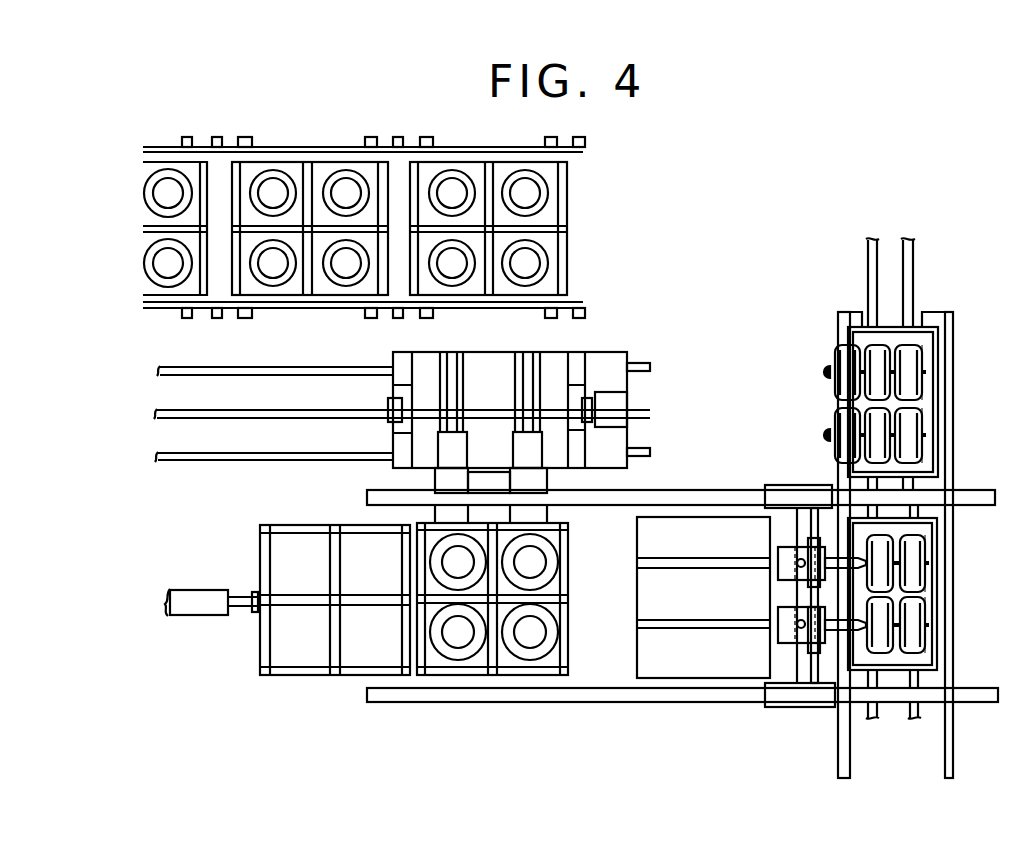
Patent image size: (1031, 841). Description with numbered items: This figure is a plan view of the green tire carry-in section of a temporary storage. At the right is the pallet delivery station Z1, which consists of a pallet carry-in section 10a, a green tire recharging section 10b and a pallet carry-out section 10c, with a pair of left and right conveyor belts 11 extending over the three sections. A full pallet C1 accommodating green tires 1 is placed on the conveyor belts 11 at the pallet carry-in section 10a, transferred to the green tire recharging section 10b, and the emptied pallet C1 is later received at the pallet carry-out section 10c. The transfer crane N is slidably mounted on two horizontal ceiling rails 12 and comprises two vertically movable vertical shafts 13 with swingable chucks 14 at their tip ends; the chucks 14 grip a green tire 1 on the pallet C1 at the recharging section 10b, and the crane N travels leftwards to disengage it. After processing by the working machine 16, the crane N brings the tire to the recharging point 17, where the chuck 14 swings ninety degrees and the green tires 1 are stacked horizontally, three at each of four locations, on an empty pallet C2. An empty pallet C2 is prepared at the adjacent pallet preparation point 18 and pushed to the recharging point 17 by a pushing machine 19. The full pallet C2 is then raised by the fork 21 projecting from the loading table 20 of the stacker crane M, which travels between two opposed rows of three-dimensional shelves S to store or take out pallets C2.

The green tire 1 is at (567, 188).
The three-dimensional shelves S is at (567, 298).
The loading table 20 is at (555, 358).
The stacker crane M is at (627, 355).
The fork 21 is at (435, 481).
The ceiling rails 12 is at (665, 490).
The vertical shafts 13 is at (800, 558).
The chucks 14 is at (815, 538).
The working machine 16 is at (636, 600).
The recharging point 17 is at (510, 680).
The pallet preparation point 18 is at (342, 676).
The pushing machine 19 is at (215, 618).
The pallet C2 is at (318, 676).
The full pallet C1 is at (953, 600).
The pallet delivery station Z1 is at (953, 634).
The pallet carry-in section 10a is at (1012, 452).
The green tire recharging section 10b is at (1013, 559).
The pallet carry-out section 10c is at (1017, 734).
The conveyor belts 11 is at (838, 763).
The transfer crane N is at (783, 705).